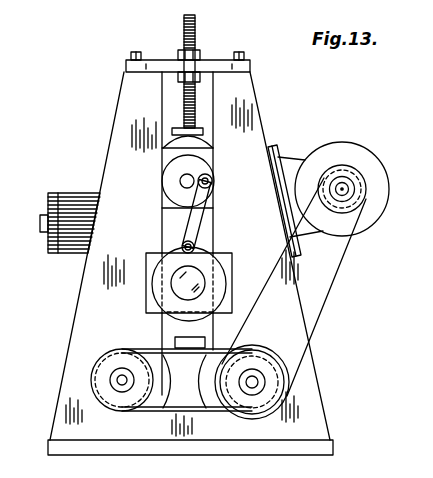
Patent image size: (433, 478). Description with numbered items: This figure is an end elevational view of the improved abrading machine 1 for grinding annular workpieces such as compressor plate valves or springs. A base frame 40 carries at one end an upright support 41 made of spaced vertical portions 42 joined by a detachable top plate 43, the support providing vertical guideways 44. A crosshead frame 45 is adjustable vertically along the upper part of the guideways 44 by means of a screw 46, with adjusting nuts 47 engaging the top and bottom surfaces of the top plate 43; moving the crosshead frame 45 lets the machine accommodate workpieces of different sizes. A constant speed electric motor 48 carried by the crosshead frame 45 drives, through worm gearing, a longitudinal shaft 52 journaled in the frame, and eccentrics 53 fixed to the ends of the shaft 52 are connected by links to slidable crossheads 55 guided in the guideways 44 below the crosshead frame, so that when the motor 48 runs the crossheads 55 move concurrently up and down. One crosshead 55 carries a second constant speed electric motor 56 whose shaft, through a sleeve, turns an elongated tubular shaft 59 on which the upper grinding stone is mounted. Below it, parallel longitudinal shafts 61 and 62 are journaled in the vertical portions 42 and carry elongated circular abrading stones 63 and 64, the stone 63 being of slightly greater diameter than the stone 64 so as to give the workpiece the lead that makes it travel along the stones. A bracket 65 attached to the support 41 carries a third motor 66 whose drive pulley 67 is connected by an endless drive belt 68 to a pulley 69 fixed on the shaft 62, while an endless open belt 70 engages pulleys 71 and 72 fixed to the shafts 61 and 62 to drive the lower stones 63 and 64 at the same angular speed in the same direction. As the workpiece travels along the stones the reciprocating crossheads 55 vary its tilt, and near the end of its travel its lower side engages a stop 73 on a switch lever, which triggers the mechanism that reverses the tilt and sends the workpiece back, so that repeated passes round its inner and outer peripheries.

The abrading machine 1 is at (119, 91).
The base frame 40 is at (197, 447).
The upright support 41 is at (110, 153).
The vertical portions 42 is at (108, 172).
The top plate 43 is at (225, 58).
The vertical guideways 44 is at (162, 113).
The crosshead frame 45 is at (207, 157).
The screw 46 is at (193, 42).
The adjusting nuts 47 is at (172, 72).
The motor 48 is at (62, 202).
The longitudinal shaft 52 is at (180, 182).
The eccentrics 53 is at (180, 200).
The slidable crossheads 55 is at (145, 313).
The motor 56 is at (157, 285).
The tubular shaft 59 is at (197, 222).
The longitudinal shaft 61 is at (117, 380).
The longitudinal shaft 62 is at (258, 382).
The abrading stone 63 is at (167, 387).
The abrading stone 64 is at (210, 388).
The bracket 65 is at (297, 155).
The motor 66 is at (388, 178).
The drive pulley 67 is at (348, 172).
The endless drive belt 68 is at (338, 282).
The pulley 69 is at (293, 355).
The endless open belt 70 is at (193, 350).
The pulley 71 is at (120, 398).
The pulley 72 is at (252, 398).
The stop 73 is at (182, 342).